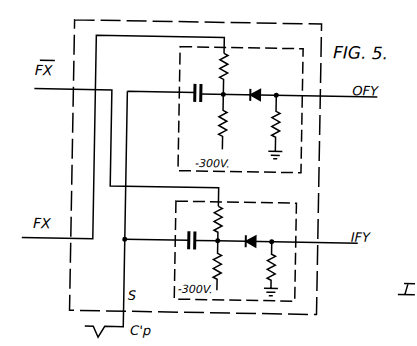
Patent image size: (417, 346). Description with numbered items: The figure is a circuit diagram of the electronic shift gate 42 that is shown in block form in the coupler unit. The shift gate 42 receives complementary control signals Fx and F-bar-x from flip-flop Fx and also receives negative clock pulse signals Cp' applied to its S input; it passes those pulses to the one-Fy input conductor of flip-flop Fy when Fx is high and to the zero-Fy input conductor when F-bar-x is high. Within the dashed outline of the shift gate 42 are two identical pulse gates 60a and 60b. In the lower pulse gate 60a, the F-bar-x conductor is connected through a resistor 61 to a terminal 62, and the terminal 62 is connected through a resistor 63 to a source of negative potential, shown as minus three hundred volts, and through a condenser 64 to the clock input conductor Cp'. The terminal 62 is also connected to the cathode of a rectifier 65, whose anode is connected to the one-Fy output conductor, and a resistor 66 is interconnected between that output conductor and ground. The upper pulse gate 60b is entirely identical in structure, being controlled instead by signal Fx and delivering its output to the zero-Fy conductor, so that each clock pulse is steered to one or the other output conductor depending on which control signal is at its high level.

The shift gate 42 is at (316, 187).
The pulse gate 60a is at (266, 251).
The pulse gate 60b is at (290, 161).
The resistor 61 is at (223, 219).
The terminal 62 is at (211, 247).
The resistor 63 is at (232, 266).
The condenser 64 is at (203, 222).
The rectifier 65 is at (257, 237).
The resistor 66 is at (270, 270).